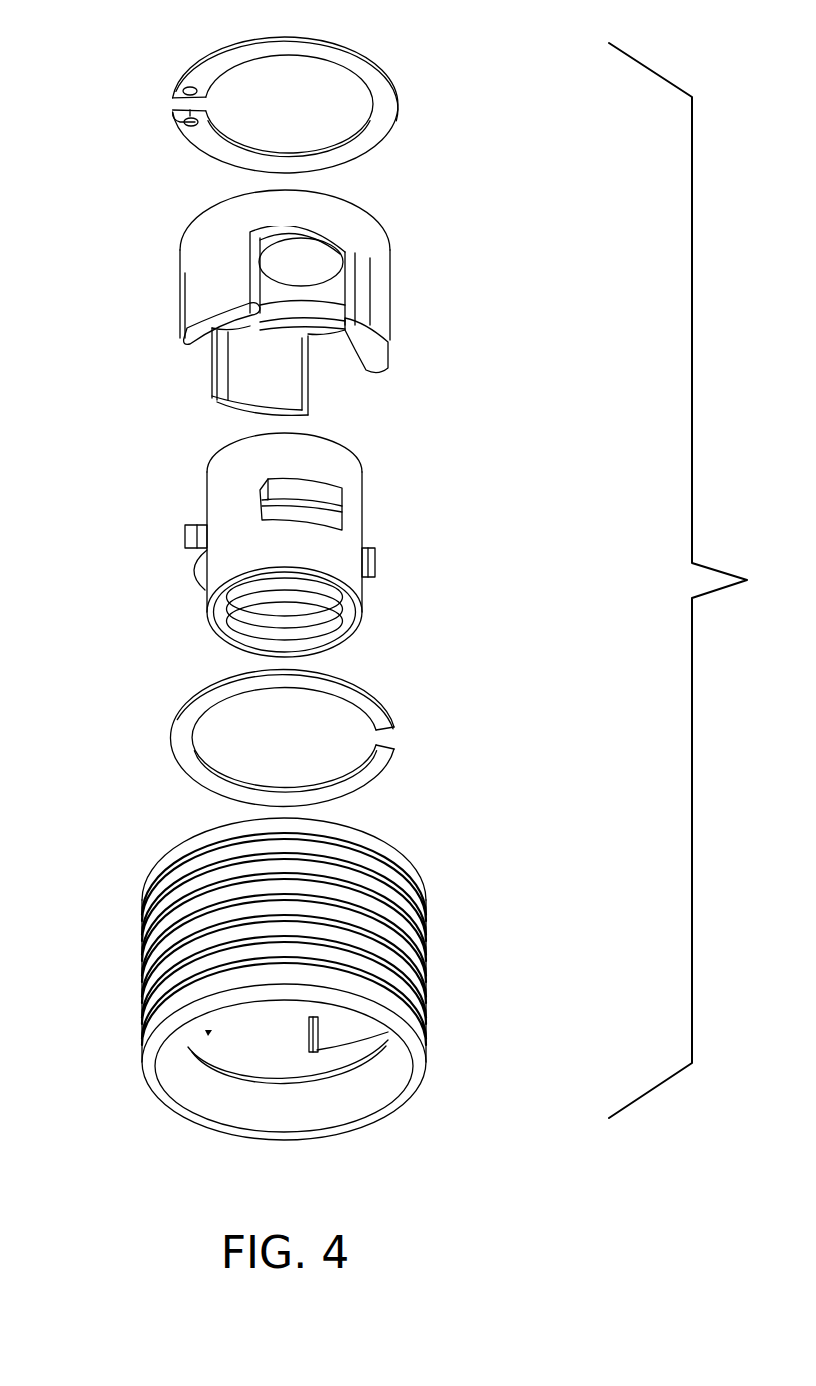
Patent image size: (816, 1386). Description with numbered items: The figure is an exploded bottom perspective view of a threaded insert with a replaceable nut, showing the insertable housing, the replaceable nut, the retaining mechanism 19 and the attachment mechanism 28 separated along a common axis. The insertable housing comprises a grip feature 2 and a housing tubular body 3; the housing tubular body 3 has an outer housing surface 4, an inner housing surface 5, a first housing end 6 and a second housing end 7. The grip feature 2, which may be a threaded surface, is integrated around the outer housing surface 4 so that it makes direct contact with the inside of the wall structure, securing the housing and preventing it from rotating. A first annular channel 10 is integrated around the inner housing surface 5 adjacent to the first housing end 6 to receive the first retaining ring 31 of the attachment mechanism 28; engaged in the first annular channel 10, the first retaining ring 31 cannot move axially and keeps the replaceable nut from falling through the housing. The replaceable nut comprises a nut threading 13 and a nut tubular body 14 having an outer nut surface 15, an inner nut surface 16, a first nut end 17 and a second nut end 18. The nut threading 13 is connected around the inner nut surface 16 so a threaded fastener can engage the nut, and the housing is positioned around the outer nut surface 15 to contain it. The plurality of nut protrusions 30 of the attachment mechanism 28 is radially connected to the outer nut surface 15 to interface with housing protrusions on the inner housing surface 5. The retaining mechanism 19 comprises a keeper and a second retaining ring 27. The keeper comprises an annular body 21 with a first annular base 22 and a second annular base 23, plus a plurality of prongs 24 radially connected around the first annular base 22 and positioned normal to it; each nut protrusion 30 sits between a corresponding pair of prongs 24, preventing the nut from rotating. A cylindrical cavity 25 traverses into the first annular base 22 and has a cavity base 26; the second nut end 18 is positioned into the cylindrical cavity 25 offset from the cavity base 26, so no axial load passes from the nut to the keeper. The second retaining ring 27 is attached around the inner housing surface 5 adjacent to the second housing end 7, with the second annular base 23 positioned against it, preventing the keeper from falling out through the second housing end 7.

The grip feature 2 is at (347, 984).
The housing tubular body 3 is at (347, 984).
The outer housing surface 4 is at (418, 950).
The inner housing surface 5 is at (340, 1103).
The first housing end 6 is at (242, 1144).
The second housing end 7 is at (340, 820).
The first annular channel 10 is at (285, 1083).
The nut threading 13 is at (225, 625).
The nut tubular body 14 is at (220, 545).
The outer nut surface 15 is at (215, 512).
The inner nut surface 16 is at (238, 618).
The first nut end 17 is at (326, 648).
The second nut end 18 is at (243, 430).
The retaining mechanism 19 is at (264, 226).
The annular body 21 is at (185, 257).
The first annular base 22 is at (262, 250).
The second annular base 23 is at (345, 190).
The plurality of prongs 24 is at (188, 318).
The cylindrical cavity 25 is at (290, 340).
The cavity base 26 is at (327, 352).
The second retaining ring 27 is at (190, 135).
The attachment mechanism 28 is at (275, 666).
The plurality of nut protrusions 30 is at (185, 545).
The first retaining ring 31 is at (180, 750).